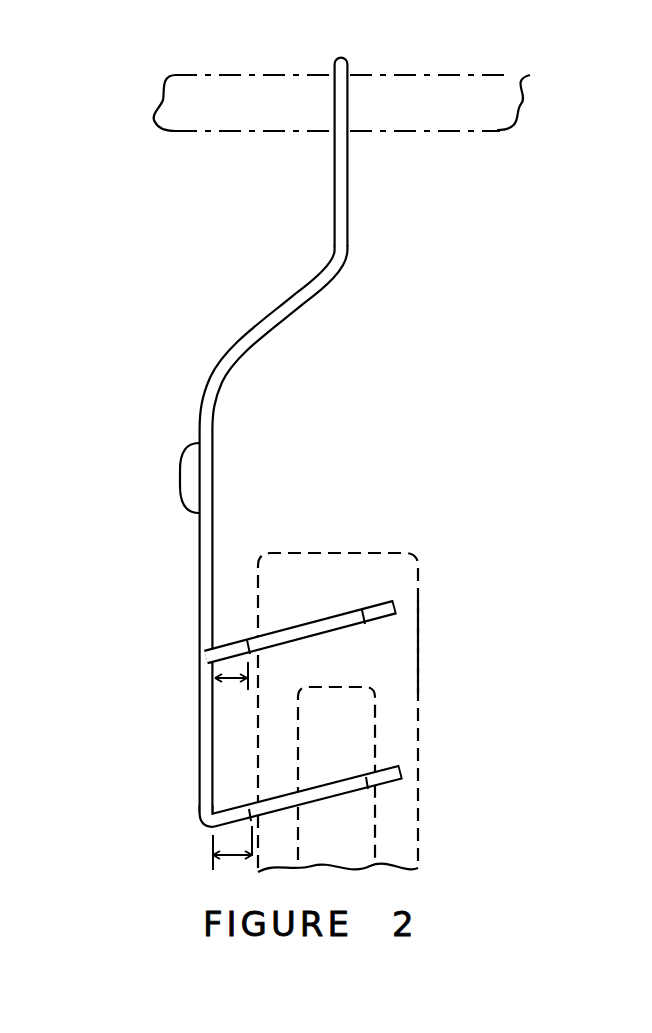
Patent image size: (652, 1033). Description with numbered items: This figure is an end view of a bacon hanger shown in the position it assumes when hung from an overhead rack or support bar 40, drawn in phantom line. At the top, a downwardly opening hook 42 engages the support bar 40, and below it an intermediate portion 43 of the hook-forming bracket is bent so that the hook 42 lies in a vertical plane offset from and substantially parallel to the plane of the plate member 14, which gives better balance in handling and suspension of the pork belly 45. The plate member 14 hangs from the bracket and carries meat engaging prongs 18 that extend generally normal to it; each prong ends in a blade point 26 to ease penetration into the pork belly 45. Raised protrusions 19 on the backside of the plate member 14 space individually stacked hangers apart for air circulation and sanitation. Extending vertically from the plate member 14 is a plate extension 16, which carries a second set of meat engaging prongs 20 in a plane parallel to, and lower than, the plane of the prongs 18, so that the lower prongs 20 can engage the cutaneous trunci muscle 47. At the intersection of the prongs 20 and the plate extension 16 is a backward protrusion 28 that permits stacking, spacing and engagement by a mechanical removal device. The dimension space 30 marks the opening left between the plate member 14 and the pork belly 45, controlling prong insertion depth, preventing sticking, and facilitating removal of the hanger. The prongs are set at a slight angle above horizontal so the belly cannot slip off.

The plate member 14 is at (217, 550).
The plate extension 16 is at (198, 707).
The meat engaging prongs 18 is at (335, 609).
The raised protrusions 19 is at (178, 476).
The meat engaging prongs 20 is at (312, 798).
The blade point 26 is at (396, 603).
The backward protrusion 28 is at (197, 730).
The space 30 is at (232, 778).
The rack or support bar 40 is at (508, 95).
The downwardly opening hook 42 is at (350, 104).
The intermediate portion 43 is at (268, 330).
The pork belly 45 is at (428, 630).
The cutaneous trunci muscle 47 is at (362, 723).